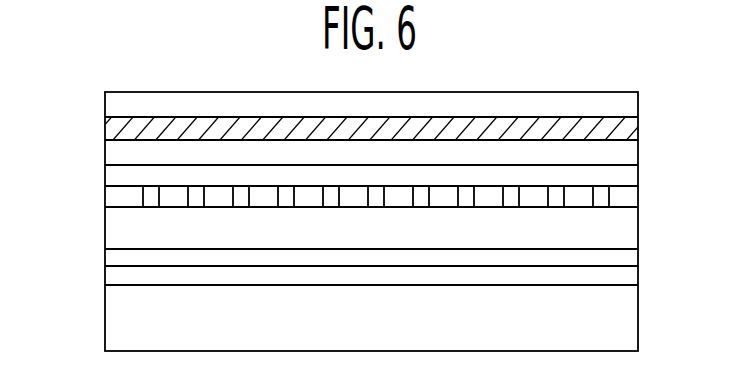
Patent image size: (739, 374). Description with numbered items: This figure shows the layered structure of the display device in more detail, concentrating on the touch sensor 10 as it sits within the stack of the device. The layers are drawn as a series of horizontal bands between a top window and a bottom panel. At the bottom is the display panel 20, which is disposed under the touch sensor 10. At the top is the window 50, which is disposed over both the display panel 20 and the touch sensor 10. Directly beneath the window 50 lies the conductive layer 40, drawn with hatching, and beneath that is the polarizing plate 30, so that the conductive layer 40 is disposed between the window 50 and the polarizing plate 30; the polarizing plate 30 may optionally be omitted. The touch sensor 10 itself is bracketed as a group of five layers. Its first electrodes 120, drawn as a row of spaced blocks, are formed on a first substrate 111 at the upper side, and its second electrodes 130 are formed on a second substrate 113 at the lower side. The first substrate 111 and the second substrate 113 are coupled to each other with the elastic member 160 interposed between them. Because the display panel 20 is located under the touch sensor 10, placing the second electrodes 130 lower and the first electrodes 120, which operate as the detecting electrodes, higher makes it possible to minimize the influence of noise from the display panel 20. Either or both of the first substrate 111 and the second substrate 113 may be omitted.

The touch sensor 10 is at (31, 157).
The display panel 20 is at (628, 333).
The polarizing plate 30 is at (630, 155).
The conductive layer 40 is at (636, 126).
The window 50 is at (630, 100).
The first substrate 111 is at (108, 177).
The second substrate 113 is at (115, 272).
The first electrodes 120 is at (115, 200).
The second electrodes 130 is at (115, 258).
The elastic member 160 is at (115, 230).